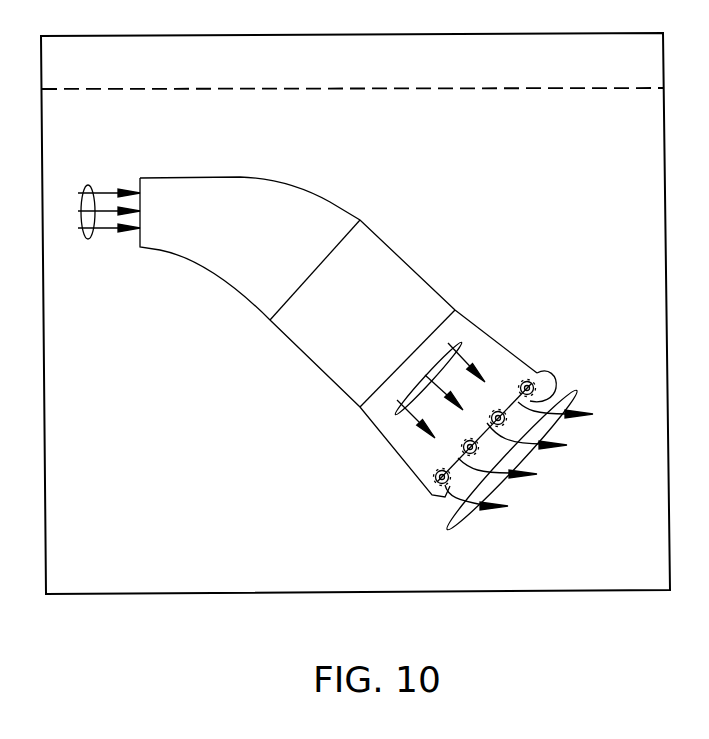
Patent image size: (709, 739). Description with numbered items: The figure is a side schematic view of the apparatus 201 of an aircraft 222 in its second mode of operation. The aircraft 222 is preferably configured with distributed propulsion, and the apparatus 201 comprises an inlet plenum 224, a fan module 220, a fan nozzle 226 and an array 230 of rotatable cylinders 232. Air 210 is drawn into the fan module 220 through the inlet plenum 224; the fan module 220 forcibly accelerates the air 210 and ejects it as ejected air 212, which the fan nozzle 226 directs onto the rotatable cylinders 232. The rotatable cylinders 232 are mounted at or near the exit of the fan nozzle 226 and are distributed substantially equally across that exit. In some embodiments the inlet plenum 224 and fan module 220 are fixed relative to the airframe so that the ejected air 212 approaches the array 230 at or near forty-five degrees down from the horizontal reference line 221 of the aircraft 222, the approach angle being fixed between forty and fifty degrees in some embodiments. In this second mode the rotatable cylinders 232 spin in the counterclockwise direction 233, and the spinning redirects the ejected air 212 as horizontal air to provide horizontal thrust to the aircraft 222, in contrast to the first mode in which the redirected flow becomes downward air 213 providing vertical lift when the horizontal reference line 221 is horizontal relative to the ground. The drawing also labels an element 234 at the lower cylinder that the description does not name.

The apparatus 201 is at (358, 162).
The air 210 is at (88, 190).
The ejected air 212 is at (398, 405).
The downward air 213 is at (572, 393).
The fan module 220 is at (300, 352).
The horizontal reference line 221 is at (150, 90).
The aircraft 222 is at (139, 457).
The inlet plenum 224 is at (245, 176).
The fan nozzle 226 is at (492, 336).
The array 230 is at (372, 502).
The rotatable cylinders 232 is at (462, 501).
The counterclockwise direction 233 is at (545, 358).
The pivot gear 234 is at (437, 468).